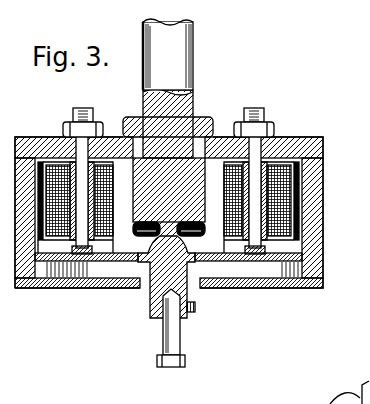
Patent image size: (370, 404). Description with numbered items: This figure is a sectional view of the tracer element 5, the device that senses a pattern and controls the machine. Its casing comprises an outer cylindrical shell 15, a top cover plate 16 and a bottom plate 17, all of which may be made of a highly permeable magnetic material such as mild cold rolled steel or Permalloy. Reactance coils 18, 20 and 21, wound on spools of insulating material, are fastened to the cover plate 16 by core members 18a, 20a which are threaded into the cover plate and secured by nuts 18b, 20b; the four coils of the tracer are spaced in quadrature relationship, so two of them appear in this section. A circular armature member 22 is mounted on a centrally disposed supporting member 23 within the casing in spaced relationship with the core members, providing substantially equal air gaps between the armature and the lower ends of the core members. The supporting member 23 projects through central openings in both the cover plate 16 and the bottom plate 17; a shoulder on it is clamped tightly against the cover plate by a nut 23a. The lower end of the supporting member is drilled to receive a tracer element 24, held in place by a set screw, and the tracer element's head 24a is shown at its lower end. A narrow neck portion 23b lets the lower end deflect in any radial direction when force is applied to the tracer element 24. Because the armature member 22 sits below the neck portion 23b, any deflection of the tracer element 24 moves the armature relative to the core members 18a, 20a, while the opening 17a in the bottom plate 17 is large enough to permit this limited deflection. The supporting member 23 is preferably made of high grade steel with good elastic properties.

The tracer element 5 is at (325, 134).
The outer cylindrical shell 15 is at (318, 179).
The top cover plate 16 is at (297, 137).
The bottom plate 17 is at (287, 289).
The opening 17a is at (190, 289).
The reactance coil 18 is at (46, 276).
The core member 18a is at (79, 108).
The nut 18b is at (62, 130).
The reactance coil 20 is at (300, 203).
The core member 20a is at (256, 108).
The nut 20b is at (241, 128).
The reactance coil 21 is at (196, 238).
The armature member 22 is at (240, 262).
The supporting member 23 is at (194, 48).
The nut 23a is at (131, 119).
The neck portion 23b is at (150, 238).
The tracer element 24 is at (165, 338).
The bolt head 24a is at (158, 365).